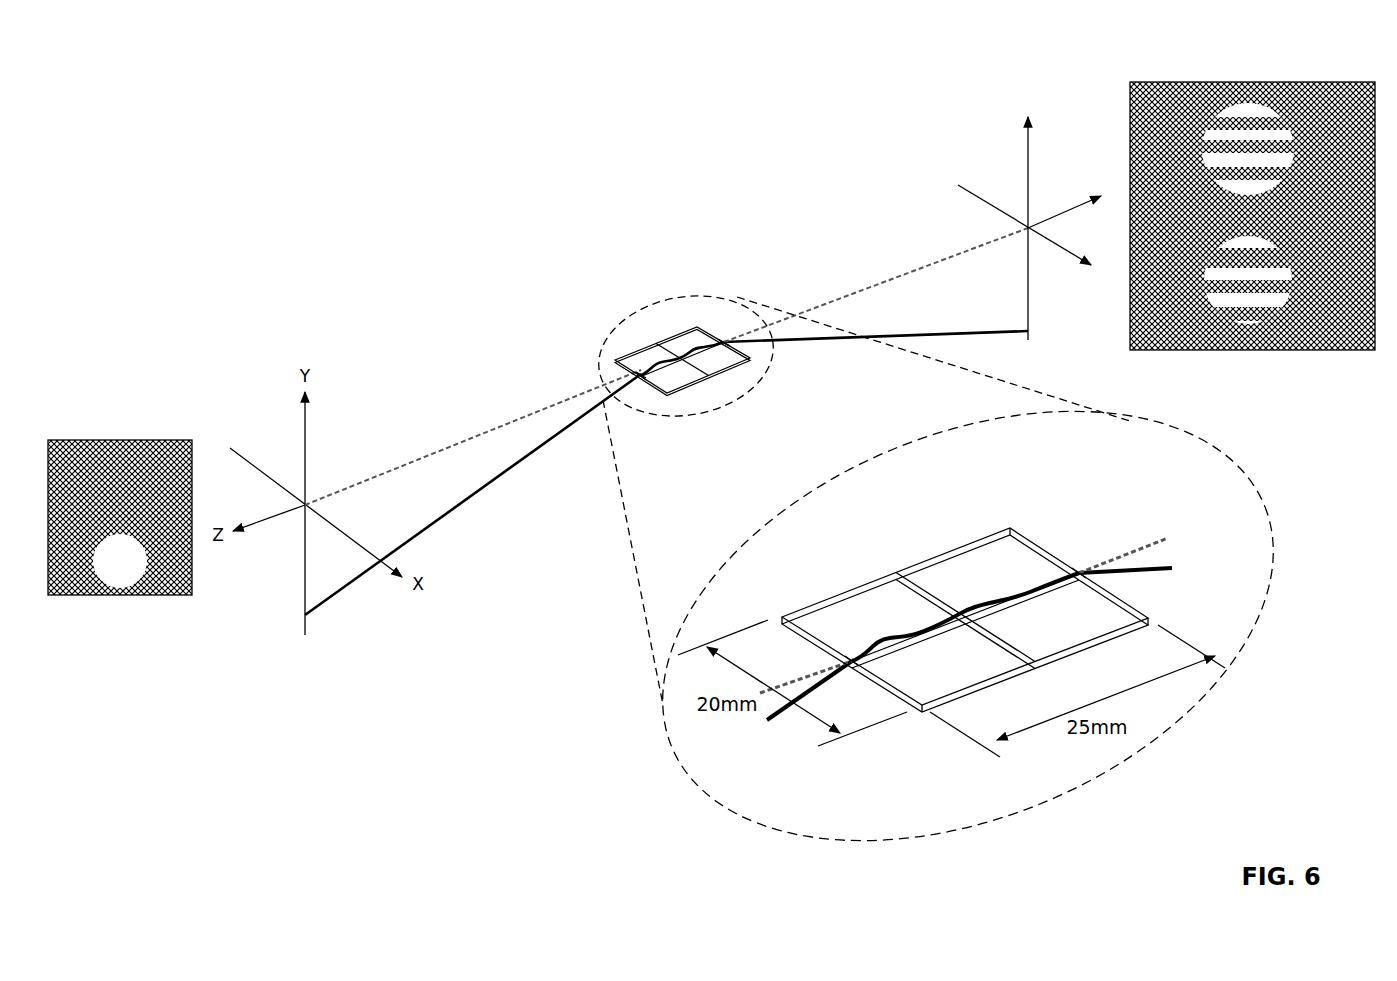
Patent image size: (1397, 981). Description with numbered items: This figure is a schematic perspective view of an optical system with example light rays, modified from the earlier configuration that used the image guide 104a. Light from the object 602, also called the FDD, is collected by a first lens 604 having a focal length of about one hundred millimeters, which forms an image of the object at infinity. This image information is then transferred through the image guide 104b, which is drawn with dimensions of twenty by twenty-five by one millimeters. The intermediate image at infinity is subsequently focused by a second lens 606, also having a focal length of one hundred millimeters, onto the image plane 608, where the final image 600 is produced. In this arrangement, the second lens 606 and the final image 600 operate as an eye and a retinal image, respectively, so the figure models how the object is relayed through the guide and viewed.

The image 600 is at (1165, 78).
The object 602 is at (84, 436).
The first lens 604 is at (634, 364).
The second lens 606 is at (731, 335).
The image plane 608 is at (1025, 172).
The image guide 104a is at (712, 331).
The image guide 104b is at (656, 338).